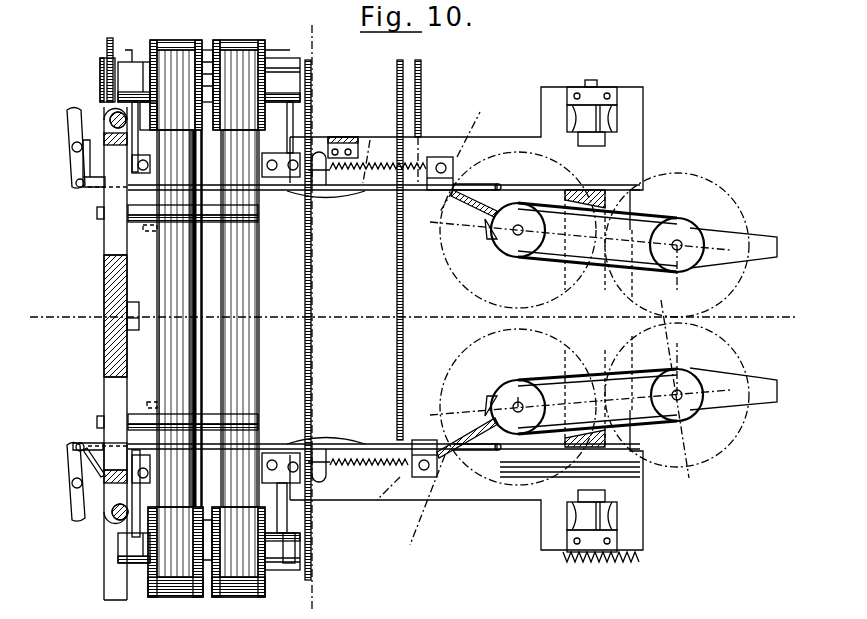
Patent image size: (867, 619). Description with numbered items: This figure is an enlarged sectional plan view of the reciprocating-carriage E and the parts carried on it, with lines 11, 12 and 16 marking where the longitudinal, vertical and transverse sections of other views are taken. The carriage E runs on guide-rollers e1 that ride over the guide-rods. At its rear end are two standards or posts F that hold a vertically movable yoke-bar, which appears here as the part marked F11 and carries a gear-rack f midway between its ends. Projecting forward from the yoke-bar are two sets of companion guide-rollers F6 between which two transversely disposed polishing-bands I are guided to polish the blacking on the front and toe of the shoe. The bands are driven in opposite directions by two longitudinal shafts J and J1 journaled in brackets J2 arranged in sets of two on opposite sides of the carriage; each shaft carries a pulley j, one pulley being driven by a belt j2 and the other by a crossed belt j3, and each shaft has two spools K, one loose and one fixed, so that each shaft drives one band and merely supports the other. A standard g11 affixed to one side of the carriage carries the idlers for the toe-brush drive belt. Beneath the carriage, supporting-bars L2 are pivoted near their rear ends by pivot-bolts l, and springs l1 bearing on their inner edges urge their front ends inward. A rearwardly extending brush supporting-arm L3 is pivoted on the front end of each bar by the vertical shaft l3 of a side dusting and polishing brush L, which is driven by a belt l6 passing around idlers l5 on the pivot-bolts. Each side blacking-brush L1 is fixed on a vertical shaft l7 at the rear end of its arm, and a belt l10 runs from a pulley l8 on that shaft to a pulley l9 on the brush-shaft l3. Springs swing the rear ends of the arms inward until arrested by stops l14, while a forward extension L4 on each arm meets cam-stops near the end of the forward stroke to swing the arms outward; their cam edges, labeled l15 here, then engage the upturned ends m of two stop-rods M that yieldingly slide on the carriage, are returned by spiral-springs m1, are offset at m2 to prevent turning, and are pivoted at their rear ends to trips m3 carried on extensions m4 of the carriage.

The section line 11— 11 is at (52, 325).
The section line 16— 16 is at (322, 23).
The section line 12— 12 is at (670, 308).
The side plate F11 is at (104, 260).
The gear-rack f is at (136, 330).
The offset m2 is at (146, 316).
The polishing-bands I is at (160, 280).
The spools K is at (268, 55).
The guide-rollers F6 is at (260, 214).
The side blacking-brushes L1 is at (447, 308).
The second belt j3 is at (104, 47).
The pulley j is at (98, 70).
The guide-rollers e1 is at (135, 98).
The standards or posts F is at (112, 118).
The trip m3 is at (68, 128).
The extensions m4 is at (88, 150).
The brackets J2 is at (140, 141).
The longitudinal shaft J is at (298, 80).
The longitudinal shaft J1 is at (318, 553).
The reciprocating-carriage E is at (460, 500).
The belt j2 is at (312, 365).
The belts l6 is at (421, 95).
The spiral-springs m1 is at (378, 316).
The standard g11 is at (352, 137).
The stop-rods M is at (432, 198).
The pivot-bolts or studs l is at (442, 163).
The idlers l5 is at (426, 328).
The springs l1 is at (340, 437).
The forward upturned ends m is at (500, 184).
The supporting-bars L2 is at (490, 206).
The vertical shaft l7 is at (516, 242).
The pulleys l8 is at (538, 256).
The belt l10 is at (635, 272).
The stops l14 is at (553, 280).
The brush supporting-arm L3 is at (588, 240).
The brush-shaft l3 is at (681, 241).
The forward extension L4 is at (765, 238).
The pulley l9 is at (678, 275).
The pulley path circle l15 is at (453, 440).
The vertical side dusting and polishing brushes L is at (751, 315).